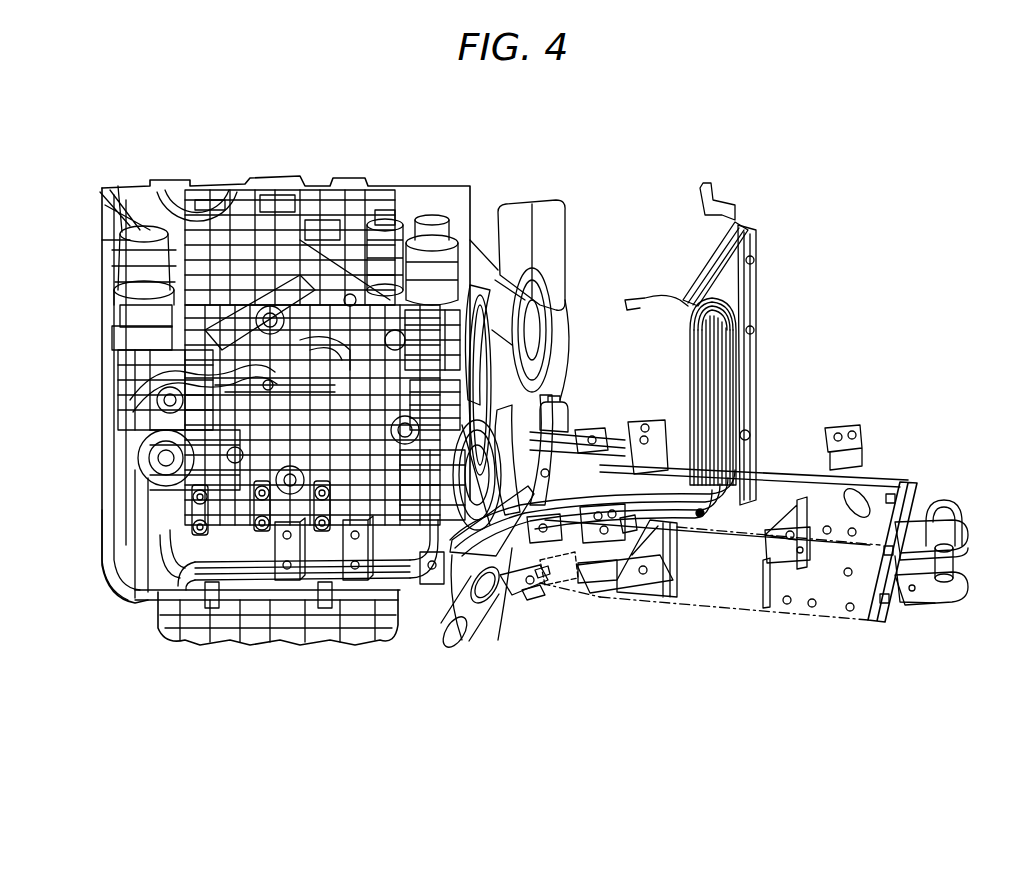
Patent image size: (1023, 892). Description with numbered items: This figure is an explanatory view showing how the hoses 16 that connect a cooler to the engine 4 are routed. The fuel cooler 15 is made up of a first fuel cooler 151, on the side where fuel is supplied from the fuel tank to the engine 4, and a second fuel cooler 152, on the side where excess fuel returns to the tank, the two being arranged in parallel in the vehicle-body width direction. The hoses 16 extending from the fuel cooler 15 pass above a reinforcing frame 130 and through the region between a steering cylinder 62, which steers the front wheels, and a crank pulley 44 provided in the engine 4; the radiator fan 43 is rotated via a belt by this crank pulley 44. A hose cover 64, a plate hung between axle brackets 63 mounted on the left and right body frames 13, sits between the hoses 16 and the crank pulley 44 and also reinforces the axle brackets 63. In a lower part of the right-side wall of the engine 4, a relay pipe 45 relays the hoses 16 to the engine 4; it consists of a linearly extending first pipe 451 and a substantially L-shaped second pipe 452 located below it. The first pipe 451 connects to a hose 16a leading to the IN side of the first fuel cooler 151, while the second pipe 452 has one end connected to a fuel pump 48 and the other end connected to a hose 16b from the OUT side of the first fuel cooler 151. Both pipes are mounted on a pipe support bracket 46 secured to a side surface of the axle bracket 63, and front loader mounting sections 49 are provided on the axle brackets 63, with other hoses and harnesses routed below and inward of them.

The engine 4 is at (269, 431).
The fuel pump 48 is at (388, 208).
The radiator fan 43 is at (558, 200).
The fuel cooler 15 is at (685, 369).
The first fuel cooler 151 is at (735, 330).
The second fuel cooler 152 is at (740, 222).
The axle bracket 63 is at (568, 415).
The body frame 13 is at (747, 565).
The pipe support bracket 46 is at (105, 528).
The front loader mounting section 49 is at (225, 612).
The second pipe 452 is at (280, 545).
The first pipe 451 is at (322, 600).
The relay pipe 45 is at (308, 631).
The hose cover 64 is at (458, 618).
The steering cylinder 62 is at (522, 590).
The crank pulley 44 is at (517, 582).
The reinforcing frame 130 is at (637, 572).
The hose 16b is at (683, 508).
The hose 16a is at (733, 478).
The hoses 16 is at (693, 604).